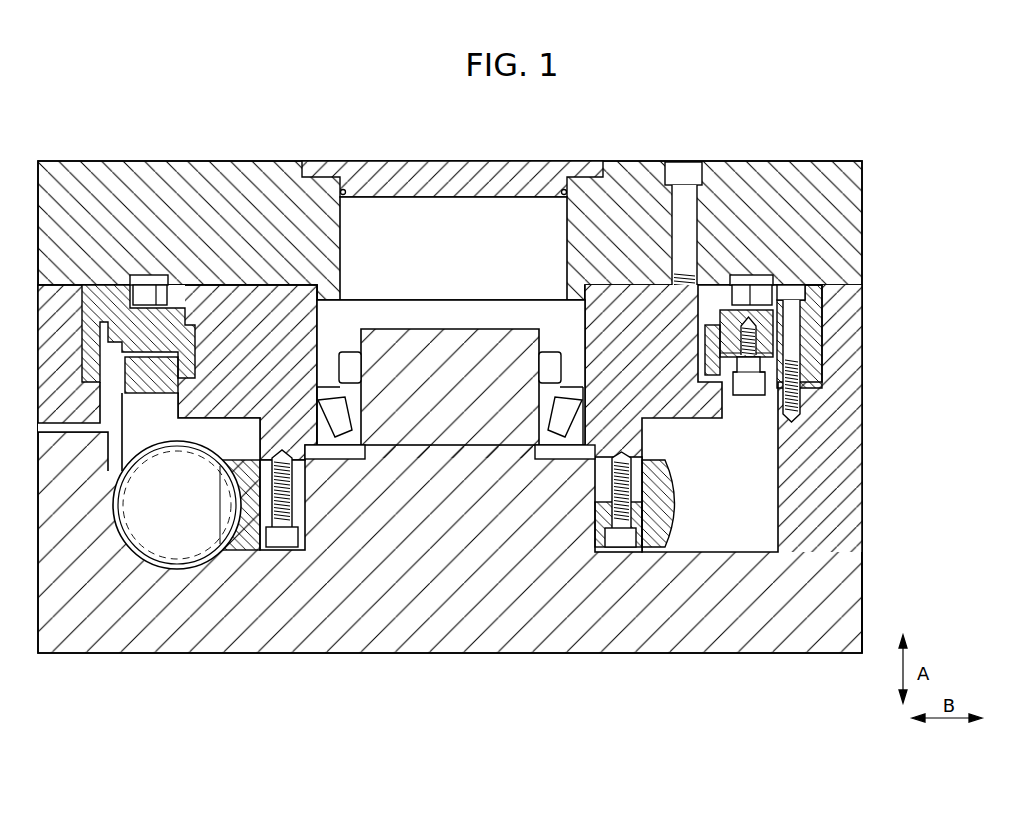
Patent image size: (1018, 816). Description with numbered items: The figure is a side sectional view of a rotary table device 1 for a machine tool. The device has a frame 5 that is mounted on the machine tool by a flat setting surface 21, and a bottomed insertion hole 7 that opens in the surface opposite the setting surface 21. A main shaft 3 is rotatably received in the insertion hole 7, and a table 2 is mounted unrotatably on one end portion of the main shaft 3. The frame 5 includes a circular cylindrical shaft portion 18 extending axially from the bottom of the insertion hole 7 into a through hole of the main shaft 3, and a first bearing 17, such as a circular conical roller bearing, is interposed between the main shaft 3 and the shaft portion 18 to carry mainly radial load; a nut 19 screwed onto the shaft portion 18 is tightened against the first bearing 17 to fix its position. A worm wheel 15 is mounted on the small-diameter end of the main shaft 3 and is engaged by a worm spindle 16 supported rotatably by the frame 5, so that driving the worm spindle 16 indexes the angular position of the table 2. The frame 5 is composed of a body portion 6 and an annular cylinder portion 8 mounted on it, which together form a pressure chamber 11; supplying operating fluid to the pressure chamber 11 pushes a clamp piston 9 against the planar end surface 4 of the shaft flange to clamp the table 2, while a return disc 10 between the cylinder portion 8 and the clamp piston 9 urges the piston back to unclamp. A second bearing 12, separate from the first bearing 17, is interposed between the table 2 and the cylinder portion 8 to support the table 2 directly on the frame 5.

The rotary table device 1 is at (833, 106).
The table 2 is at (862, 173).
The main shaft 3 is at (697, 403).
The end surface 4 is at (725, 400).
The frame 5 is at (976, 222).
The body portion 6 is at (833, 322).
The insertion hole 7 is at (767, 527).
The cylinder portion 8 is at (835, 343).
The clamp piston 9 is at (753, 396).
The return disc 10 is at (800, 394).
The pressure chamber 11 is at (823, 353).
The second bearing 12 is at (760, 280).
The worm wheel 15 is at (243, 560).
The worm spindle 16 is at (193, 553).
The first bearing 17 is at (567, 400).
The shaft portion 18 is at (465, 350).
The nut 19 is at (352, 362).
The setting surface 21 is at (613, 653).